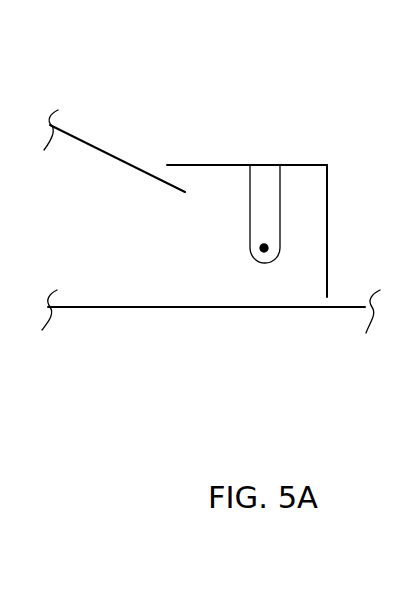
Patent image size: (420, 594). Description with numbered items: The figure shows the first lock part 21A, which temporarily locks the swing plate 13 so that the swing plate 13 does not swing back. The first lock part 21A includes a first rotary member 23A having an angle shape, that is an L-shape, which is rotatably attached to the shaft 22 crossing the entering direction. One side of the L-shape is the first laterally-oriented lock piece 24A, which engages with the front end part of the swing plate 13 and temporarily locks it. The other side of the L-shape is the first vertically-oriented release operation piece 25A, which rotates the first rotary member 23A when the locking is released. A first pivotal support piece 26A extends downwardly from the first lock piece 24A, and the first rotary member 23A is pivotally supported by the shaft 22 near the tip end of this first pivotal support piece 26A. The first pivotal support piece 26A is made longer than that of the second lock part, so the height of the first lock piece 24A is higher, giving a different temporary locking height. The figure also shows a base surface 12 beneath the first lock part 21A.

The base member 12 is at (286, 310).
The swing plate 13 is at (90, 143).
The first lock part 21A is at (247, 155).
The shaft 22 is at (264, 252).
The first rotary member 23A is at (275, 155).
The first laterally-oriented lock piece 24A is at (302, 165).
The first vertically-oriented release operation piece 25A is at (328, 210).
The first pivotal support piece 26A is at (265, 208).